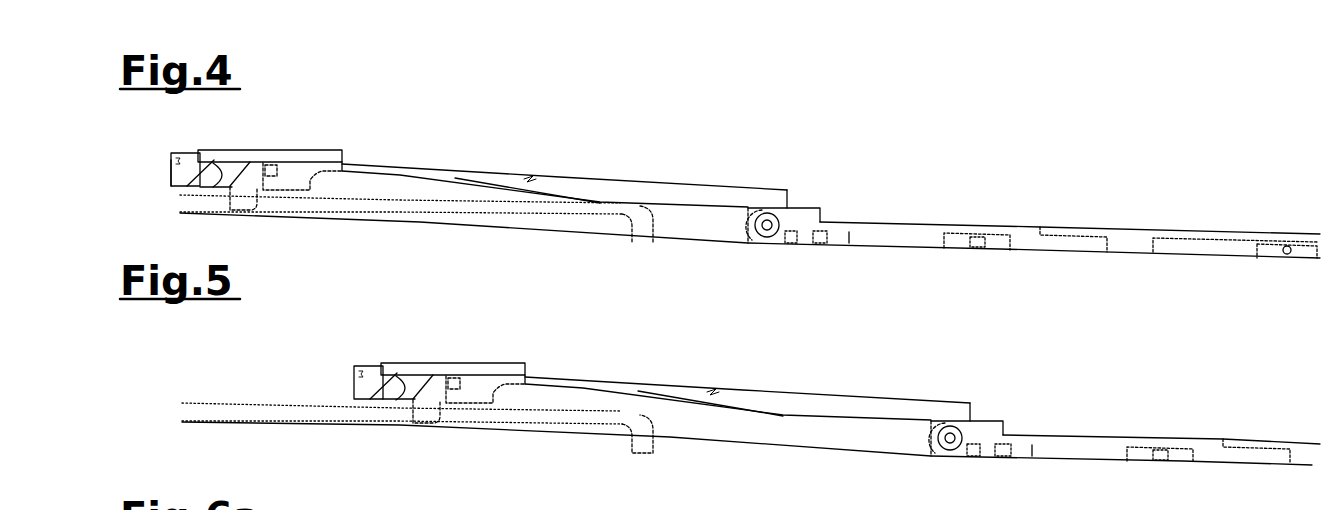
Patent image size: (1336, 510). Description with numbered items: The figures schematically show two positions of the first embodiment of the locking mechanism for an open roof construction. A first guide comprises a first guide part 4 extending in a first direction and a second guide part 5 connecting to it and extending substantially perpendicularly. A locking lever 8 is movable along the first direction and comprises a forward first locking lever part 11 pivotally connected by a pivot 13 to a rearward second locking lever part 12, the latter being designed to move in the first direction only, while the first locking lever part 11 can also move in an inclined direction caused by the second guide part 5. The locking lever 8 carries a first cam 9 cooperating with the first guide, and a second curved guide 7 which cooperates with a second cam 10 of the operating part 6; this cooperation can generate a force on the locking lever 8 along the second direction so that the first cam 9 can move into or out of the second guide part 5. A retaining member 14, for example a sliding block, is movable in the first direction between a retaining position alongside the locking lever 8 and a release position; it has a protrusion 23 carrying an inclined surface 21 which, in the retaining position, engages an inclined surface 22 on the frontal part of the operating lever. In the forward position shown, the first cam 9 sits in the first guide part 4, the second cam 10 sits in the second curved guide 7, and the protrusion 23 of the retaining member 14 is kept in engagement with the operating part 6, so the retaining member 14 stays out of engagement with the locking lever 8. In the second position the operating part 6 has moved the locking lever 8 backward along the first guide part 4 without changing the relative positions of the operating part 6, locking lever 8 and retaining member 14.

In FIG. 4, the first guide part 4 is at (423, 207).
In FIG. 5, the first guide part 4 is at (522, 413).
In FIG. 4, the second guide part 5 is at (641, 232).
In FIG. 4, the operating part 6 is at (296, 162).
In FIG. 5, the operating part 6 is at (462, 372).
In FIG. 4, the second curved guide 7 is at (287, 190).
In FIG. 4, the locking lever 8 is at (808, 289).
In FIG. 4, the first cam 9 is at (240, 203).
In FIG. 5, the first cam 9 is at (428, 413).
In FIG. 4, the second cam 10 is at (295, 180).
In FIG. 4, the first locking lever part 11 is at (718, 227).
In FIG. 5, the first locking lever part 11 is at (803, 435).
In FIG. 4, the second locking lever part 12 is at (800, 236).
In FIG. 5, the second locking lever part 12 is at (1018, 450).
In FIG. 4, the pivot 13 is at (765, 219).
In FIG. 5, the pivot 13 is at (966, 429).
In FIG. 4, the retaining member 14 is at (170, 186).
In FIG. 5, the retaining member 14 is at (354, 378).
In FIG. 4, the inclined surface 21 is at (223, 166).
In FIG. 4, the inclined surface 22 is at (238, 165).
In FIG. 4, the protrusion 23 is at (171, 172).